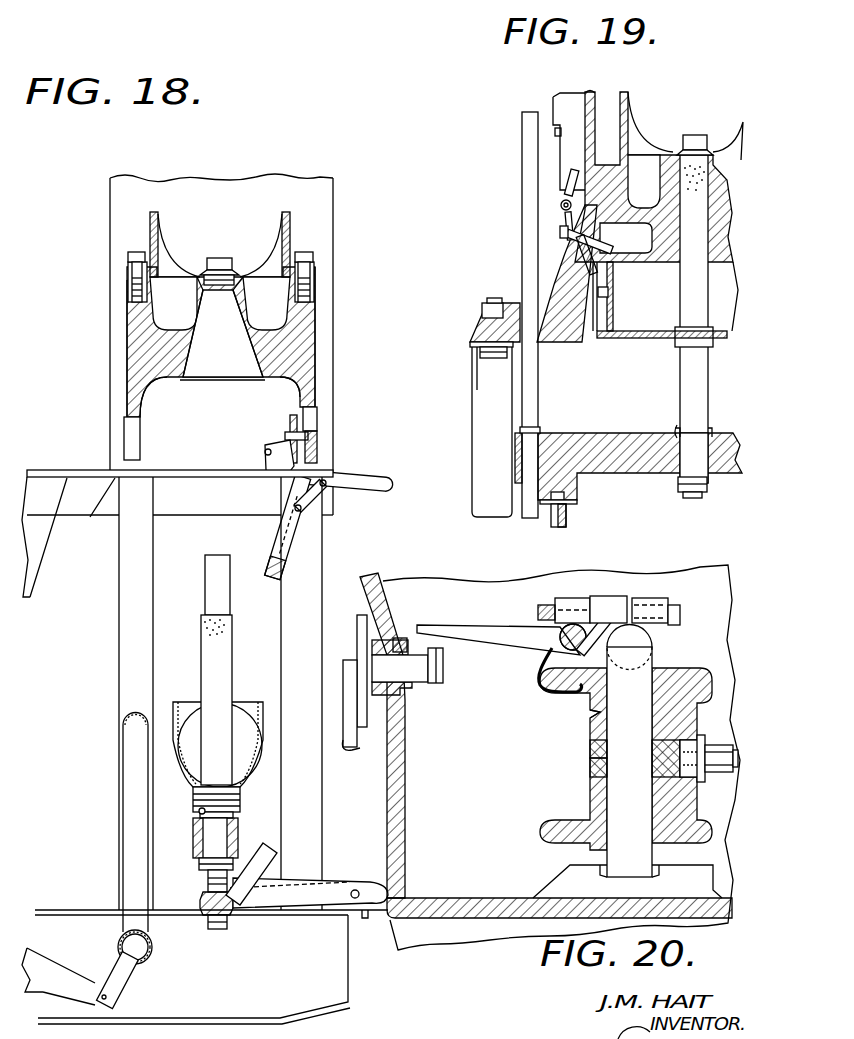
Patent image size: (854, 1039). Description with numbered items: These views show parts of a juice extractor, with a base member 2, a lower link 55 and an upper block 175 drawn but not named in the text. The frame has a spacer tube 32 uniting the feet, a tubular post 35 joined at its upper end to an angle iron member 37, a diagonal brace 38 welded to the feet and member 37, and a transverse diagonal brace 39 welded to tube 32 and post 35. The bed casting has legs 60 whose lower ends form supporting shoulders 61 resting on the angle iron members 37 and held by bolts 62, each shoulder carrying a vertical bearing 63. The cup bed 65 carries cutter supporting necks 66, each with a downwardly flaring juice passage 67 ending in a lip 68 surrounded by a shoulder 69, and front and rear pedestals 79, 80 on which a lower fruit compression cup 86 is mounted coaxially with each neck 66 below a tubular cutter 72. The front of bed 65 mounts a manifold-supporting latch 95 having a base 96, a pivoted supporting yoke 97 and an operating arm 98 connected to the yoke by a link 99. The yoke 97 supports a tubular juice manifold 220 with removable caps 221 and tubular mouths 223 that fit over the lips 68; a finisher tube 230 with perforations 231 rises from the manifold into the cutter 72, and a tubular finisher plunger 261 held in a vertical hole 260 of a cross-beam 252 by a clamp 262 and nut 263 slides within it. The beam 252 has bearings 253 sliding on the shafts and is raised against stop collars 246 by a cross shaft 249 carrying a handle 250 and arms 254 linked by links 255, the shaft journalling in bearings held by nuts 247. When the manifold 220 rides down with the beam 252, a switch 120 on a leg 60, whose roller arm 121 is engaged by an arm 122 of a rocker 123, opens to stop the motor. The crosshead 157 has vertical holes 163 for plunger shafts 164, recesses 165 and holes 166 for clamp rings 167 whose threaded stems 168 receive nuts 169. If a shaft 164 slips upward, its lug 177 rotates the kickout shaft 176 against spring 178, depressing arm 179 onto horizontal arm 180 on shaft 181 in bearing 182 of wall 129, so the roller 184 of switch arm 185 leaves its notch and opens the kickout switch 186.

In FIG. 18, the base plate 2 is at (366, 918).
In FIG. 18, the spacer tube 32 is at (151, 955).
In FIG. 18, the tubular post 35 is at (125, 681).
In FIG. 18, the angle iron member 37 is at (44, 478).
In FIG. 19, the angle iron member 37 is at (470, 365).
In FIG. 18, the diagonal brace 38 is at (52, 558).
In FIG. 18, the transverse diagonal brace 39 is at (130, 825).
In FIG. 18, the link 55 is at (125, 979).
In FIG. 19, the leg 60 is at (582, 96).
In FIG. 19, the supporting shoulder 61 is at (478, 333).
In FIG. 19, the bolt 62 is at (490, 310).
In FIG. 19, the vertical bearing 63 is at (553, 342).
In FIG. 18, the cup bed 65 is at (305, 355).
In FIG. 19, the cup bed 65 is at (660, 161).
In FIG. 18, the cutter supporting neck 66 is at (246, 311).
In FIG. 18, the juice passage 67 is at (200, 381).
In FIG. 18, the lip 68 is at (177, 380).
In FIG. 18, the shoulder 69 is at (263, 380).
In FIG. 18, the tubular cutter 72 is at (216, 262).
In FIG. 18, the front pedestal 79 is at (312, 310).
In FIG. 18, the rear pedestal 80 is at (127, 323).
In FIG. 18, the lower fruit compression cup 86 is at (291, 240).
In FIG. 18, the manifold-supporting latch 95 is at (335, 473).
In FIG. 18, the base 96 is at (284, 444).
In FIG. 18, the supporting yoke 97 is at (285, 524).
In FIG. 18, the operating arm 98 is at (358, 492).
In FIG. 18, the link 99 is at (318, 508).
In FIG. 19, the switch 120 is at (563, 153).
In FIG. 19, the roller arm 121 is at (560, 191).
In FIG. 19, the arm 122 is at (562, 220).
In FIG. 19, the rocker 123 is at (575, 250).
In FIG. 20, the wall 129 is at (400, 781).
In FIG. 20, the crosshead 157 is at (695, 709).
In FIG. 20, the vertical hole 163 is at (600, 714).
In FIG. 20, the plunger shaft 164 is at (613, 798).
In FIG. 20, the recess 165 is at (590, 750).
In FIG. 20, the hole 166 is at (701, 738).
In FIG. 20, the clamp ring 167 is at (590, 768).
In FIG. 20, the threaded stem 168 is at (690, 772).
In FIG. 20, the nut 169 is at (722, 768).
In FIG. 20, the block 175 is at (571, 604).
In FIG. 20, the automatic kickout shaft 176 is at (560, 635).
In FIG. 20, the lug 177 is at (599, 626).
In FIG. 20, the spring 178 is at (540, 683).
In FIG. 20, the arm 179 is at (505, 640).
In FIG. 20, the horizontal arm 180 is at (440, 678).
In FIG. 20, the shaft 181 is at (403, 696).
In FIG. 20, the bearing 182 is at (401, 640).
In FIG. 20, the roller 184 is at (360, 660).
In FIG. 20, the switch arm 185 is at (350, 675).
In FIG. 20, the kickout switch 186 is at (354, 750).
In FIG. 18, the tubular juice manifold 220 is at (189, 786).
In FIG. 19, the tubular juice manifold 220 is at (727, 335).
In FIG. 19, the removable cap 221 is at (608, 340).
In FIG. 18, the tubular mouth 223 is at (249, 708).
In FIG. 18, the finisher tube 230 is at (210, 666).
In FIG. 18, the perforation 231 is at (200, 632).
In FIG. 19, the stop collar 246 is at (542, 430).
In FIG. 18, the nut 247 is at (213, 926).
In FIG. 18, the cross shaft 249 is at (204, 905).
In FIG. 18, the handle 250 is at (236, 902).
In FIG. 18, the cross-beam 252 is at (239, 835).
In FIG. 19, the cross-beam 252 is at (604, 474).
In FIG. 19, the bearing 253 is at (515, 459).
In FIG. 18, the arm 254 is at (351, 880).
In FIG. 18, the link 255 is at (294, 880).
In FIG. 19, the vertical hole 260 is at (676, 434).
In FIG. 18, the tubular finisher plunger 261 is at (230, 602).
In FIG. 19, the tubular finisher plunger 261 is at (708, 410).
In FIG. 19, the clamp 262 is at (713, 433).
In FIG. 19, the nut 263 is at (708, 487).